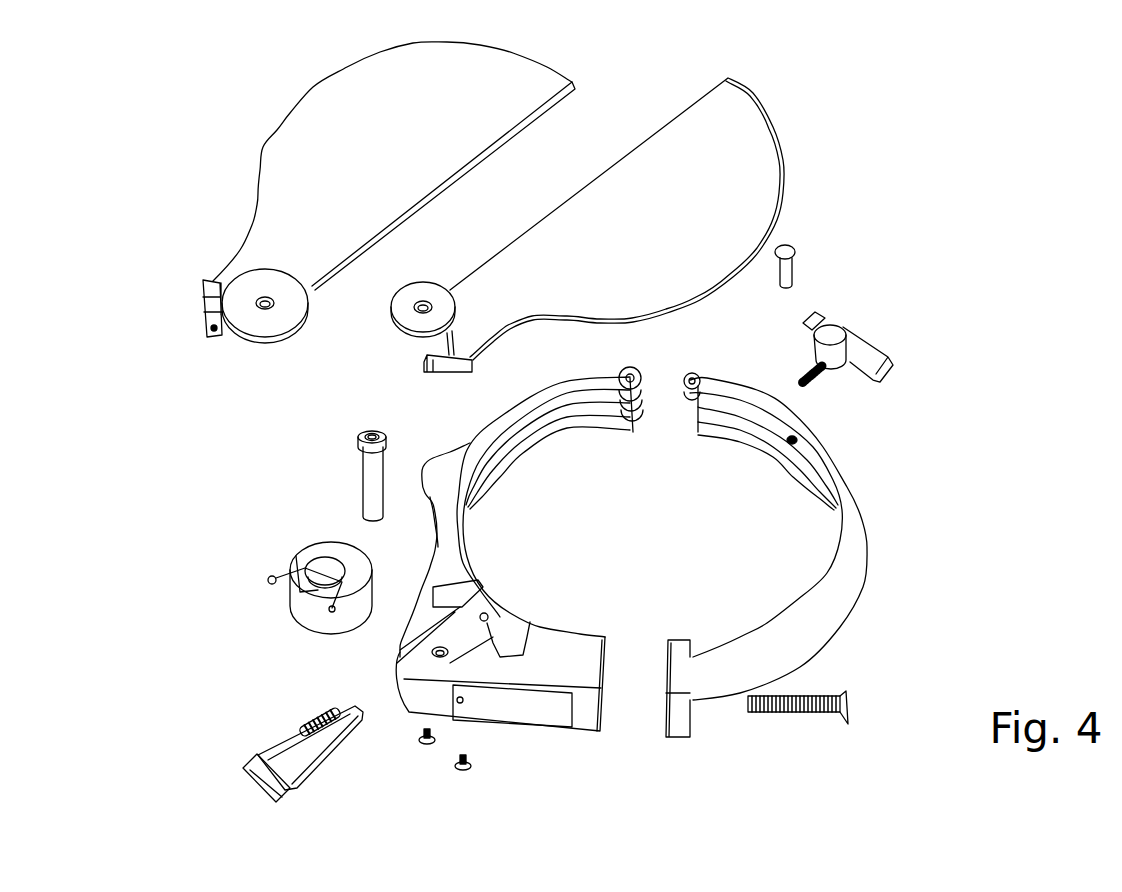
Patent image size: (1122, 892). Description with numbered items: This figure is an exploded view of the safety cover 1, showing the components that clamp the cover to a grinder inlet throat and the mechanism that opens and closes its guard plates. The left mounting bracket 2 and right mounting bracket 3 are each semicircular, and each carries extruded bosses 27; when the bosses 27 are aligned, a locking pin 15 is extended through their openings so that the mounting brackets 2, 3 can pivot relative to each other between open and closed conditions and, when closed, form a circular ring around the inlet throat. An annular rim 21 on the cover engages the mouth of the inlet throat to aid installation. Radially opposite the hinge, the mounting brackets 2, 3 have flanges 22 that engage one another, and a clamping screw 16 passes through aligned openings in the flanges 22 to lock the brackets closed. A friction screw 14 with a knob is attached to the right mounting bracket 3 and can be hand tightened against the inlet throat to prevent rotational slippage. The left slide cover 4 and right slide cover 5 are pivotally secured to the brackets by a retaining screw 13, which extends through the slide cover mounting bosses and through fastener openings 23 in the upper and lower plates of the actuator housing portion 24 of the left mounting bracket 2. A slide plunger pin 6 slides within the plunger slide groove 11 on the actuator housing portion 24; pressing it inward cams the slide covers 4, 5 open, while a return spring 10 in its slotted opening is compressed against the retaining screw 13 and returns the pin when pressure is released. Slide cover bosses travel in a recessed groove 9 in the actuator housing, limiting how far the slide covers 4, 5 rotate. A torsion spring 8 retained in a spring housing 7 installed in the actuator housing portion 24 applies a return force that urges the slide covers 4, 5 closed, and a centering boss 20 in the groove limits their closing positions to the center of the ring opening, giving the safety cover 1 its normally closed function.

The safety cover 1 is at (942, 148).
The left mounting bracket 2 is at (470, 441).
The right mounting bracket 3 is at (875, 548).
The left slide cover 4 is at (740, 165).
The right slide cover 5 is at (282, 166).
The slide plunger pin 6 is at (268, 744).
The spring housing 7 is at (292, 542).
The torsion spring 8 is at (276, 584).
The recessed groove 9 is at (507, 646).
The return spring 10 is at (312, 724).
The plunger slide groove 11 is at (418, 658).
The retaining screw 13 is at (357, 482).
The friction screw 14 is at (838, 347).
The locking pin 15 is at (792, 255).
The clamping screw 16 is at (850, 707).
The centering boss 20 is at (493, 621).
The annular rim 21 is at (723, 405).
The flanges 22 is at (677, 720).
The fastener openings 23 is at (440, 658).
The actuator housing portion 24 is at (338, 655).
The extruded bosses 27 is at (664, 378).